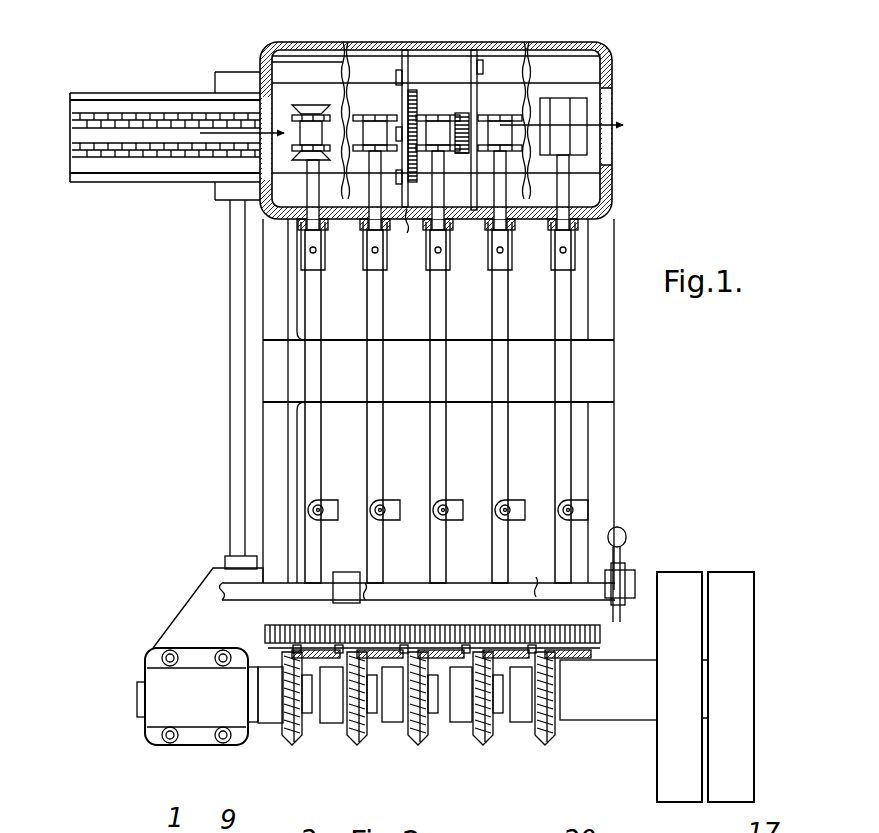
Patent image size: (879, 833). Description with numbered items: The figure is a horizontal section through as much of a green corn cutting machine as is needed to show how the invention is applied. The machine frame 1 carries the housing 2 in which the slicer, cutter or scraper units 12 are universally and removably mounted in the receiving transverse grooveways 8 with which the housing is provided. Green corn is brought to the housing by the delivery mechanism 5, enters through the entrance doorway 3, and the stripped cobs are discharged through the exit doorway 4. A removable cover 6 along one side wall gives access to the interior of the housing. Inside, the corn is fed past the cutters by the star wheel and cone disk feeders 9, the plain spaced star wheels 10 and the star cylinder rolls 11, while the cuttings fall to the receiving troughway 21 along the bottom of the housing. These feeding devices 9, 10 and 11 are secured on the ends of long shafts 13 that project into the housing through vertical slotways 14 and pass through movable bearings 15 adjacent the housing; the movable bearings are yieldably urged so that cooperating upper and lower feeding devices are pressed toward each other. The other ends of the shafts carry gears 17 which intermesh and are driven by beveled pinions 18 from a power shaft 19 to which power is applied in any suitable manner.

The machine frame 1 is at (277, 382).
The housing 2 is at (613, 58).
The entrance doorway 3 is at (270, 157).
The exit doorway 4 is at (606, 152).
The delivery mechanism 5 is at (166, 152).
The removable cover 6 is at (578, 42).
The transverse grooveways 8 is at (403, 76).
The star wheel and cone disk feeders 9 is at (311, 104).
The plain spaced star wheels 10 is at (368, 113).
The star cylinder rolls 11 is at (587, 107).
The slicer, cutter or scraper units 12 is at (392, 190).
The long shafts 13 is at (318, 448).
The vertical slotways 14 is at (293, 222).
The movable bearings 15 is at (300, 270).
The gears 17 is at (331, 627).
The beveled pinions 18 is at (333, 727).
The power shaft 19 is at (373, 700).
The receiving troughway 21 is at (286, 76).